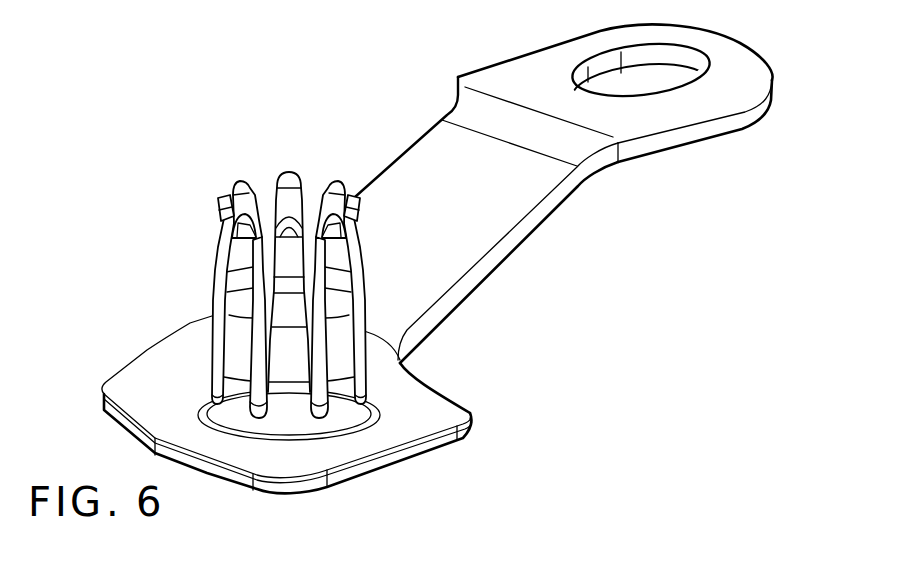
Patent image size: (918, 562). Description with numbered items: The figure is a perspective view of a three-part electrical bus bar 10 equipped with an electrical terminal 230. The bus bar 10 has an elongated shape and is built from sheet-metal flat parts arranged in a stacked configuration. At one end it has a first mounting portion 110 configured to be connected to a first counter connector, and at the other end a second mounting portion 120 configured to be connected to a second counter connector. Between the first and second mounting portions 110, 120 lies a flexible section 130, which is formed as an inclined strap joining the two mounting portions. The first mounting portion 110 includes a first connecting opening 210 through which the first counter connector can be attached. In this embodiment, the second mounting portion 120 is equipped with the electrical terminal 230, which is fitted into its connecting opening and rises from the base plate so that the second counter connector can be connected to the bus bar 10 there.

The electrical bus bar 10 is at (439, 259).
The first mounting portion 110 is at (629, 98).
The second mounting portion 120 is at (413, 467).
The flexible section 130 is at (532, 257).
The first connecting opening 210 is at (623, 82).
The electrical terminal 230 is at (232, 297).